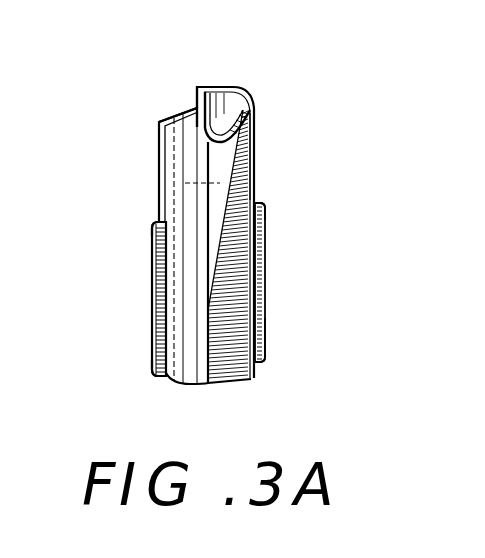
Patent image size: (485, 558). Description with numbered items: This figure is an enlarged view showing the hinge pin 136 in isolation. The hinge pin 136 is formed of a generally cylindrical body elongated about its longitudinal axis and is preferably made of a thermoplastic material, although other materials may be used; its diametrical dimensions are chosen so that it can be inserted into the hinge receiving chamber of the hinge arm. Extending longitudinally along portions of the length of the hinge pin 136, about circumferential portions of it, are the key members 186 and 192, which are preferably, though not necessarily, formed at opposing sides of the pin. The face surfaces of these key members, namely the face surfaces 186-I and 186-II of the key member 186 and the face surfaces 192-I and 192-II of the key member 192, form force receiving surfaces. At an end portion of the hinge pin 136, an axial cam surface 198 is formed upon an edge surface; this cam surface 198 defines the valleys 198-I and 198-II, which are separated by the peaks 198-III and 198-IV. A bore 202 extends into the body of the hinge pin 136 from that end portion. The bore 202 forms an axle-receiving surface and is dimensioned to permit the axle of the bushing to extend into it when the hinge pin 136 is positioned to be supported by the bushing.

The hinge pin 136 is at (259, 33).
The key member 186 is at (263, 258).
The face surface 186-I is at (264, 318).
The face surface 186-II is at (262, 205).
The key member 192 is at (153, 302).
The face surface 192-I is at (152, 361).
The face surface 192-II is at (157, 221).
The axial cam surface 198 is at (254, 102).
The valley 198-I is at (255, 158).
The valley 198-II is at (197, 126).
The peak 198-III is at (168, 117).
The peak 198-IV is at (231, 87).
The bore 202 is at (185, 183).